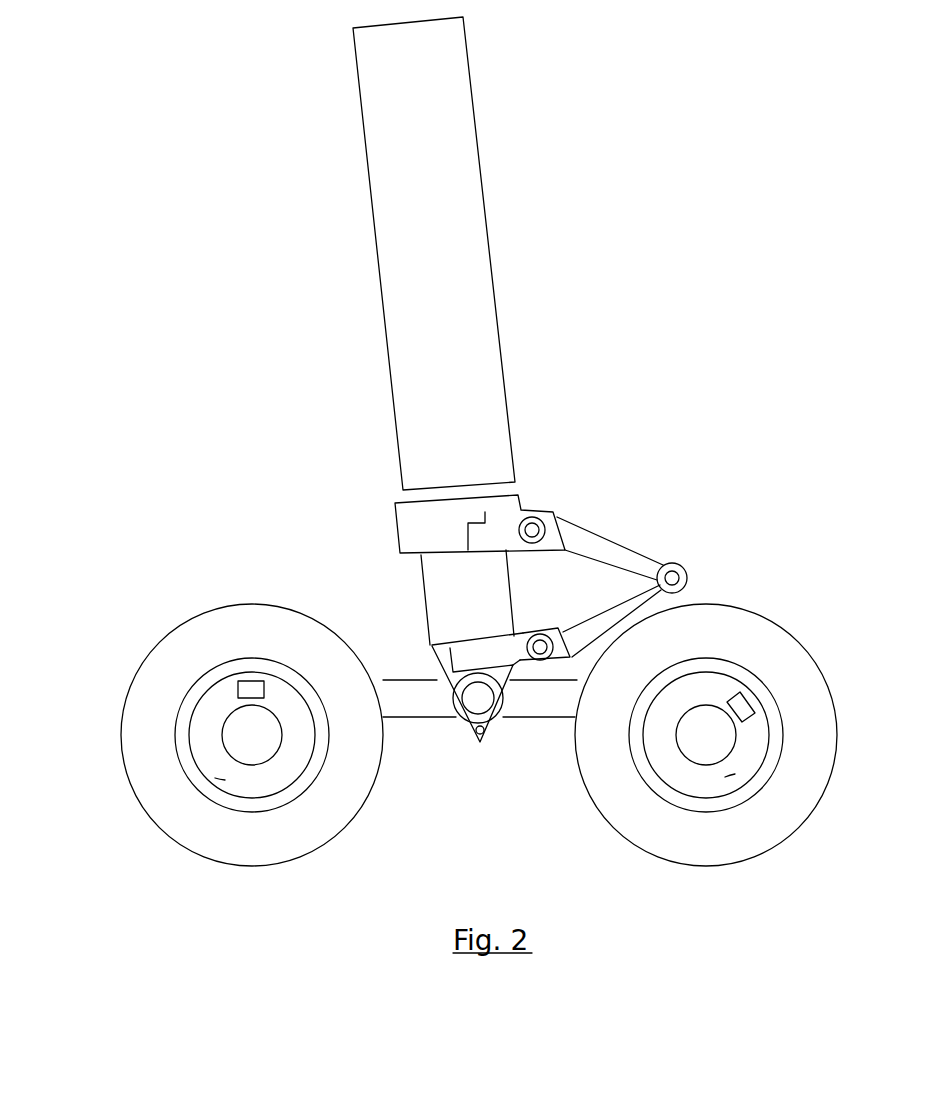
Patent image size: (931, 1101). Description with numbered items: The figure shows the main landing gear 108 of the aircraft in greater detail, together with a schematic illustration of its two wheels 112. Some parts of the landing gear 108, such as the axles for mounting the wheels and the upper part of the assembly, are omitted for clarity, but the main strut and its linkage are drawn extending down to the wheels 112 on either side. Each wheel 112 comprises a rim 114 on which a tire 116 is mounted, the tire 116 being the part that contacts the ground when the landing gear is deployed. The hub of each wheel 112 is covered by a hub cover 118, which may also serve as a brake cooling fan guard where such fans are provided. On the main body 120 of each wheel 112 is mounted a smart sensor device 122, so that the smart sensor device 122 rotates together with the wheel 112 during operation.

The main landing gear 108 is at (224, 332).
The wheel 112 is at (269, 878).
The rim 114 is at (660, 797).
The tire 116 is at (150, 713).
The hub cover 118 is at (235, 732).
The main body 120 is at (225, 780).
The smart sensor device 122 is at (257, 681).